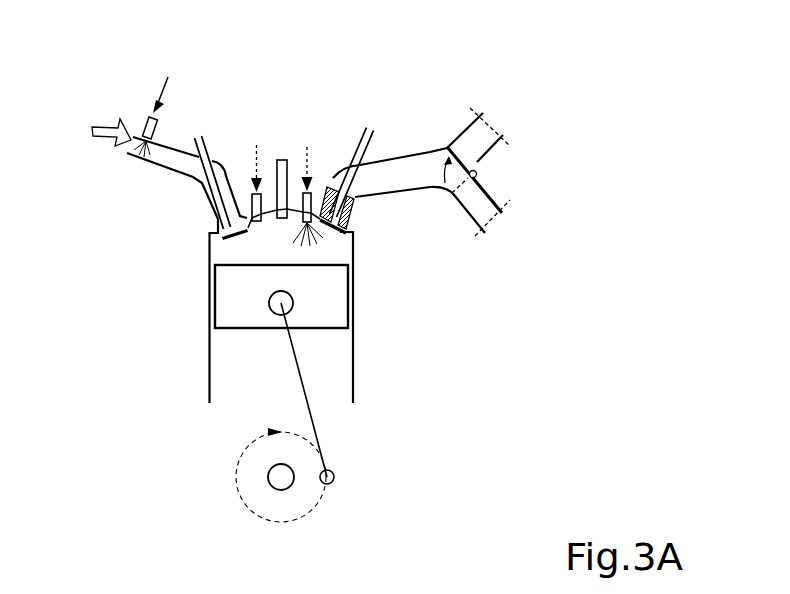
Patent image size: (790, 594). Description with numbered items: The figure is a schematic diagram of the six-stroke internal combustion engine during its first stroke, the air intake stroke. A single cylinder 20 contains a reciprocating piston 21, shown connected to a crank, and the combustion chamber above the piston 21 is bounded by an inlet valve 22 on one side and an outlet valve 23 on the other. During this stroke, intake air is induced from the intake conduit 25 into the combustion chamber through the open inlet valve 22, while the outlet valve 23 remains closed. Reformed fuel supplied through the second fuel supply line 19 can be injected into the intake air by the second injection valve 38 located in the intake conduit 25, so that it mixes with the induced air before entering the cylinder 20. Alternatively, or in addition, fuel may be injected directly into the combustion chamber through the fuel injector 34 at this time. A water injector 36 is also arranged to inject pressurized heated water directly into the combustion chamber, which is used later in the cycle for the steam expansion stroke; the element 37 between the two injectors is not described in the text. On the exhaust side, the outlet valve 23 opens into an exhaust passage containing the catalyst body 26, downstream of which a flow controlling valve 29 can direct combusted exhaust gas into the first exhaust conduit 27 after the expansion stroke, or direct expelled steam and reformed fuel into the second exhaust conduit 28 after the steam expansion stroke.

The second fuel supply line 19 is at (165, 84).
The cylinder 20 is at (178, 379).
The piston 21 is at (230, 308).
The inlet valve 22 is at (213, 195).
The outlet valve 23 is at (232, 250).
The intake conduit 25 is at (160, 163).
The catalyst body 26 is at (355, 207).
The first exhaust conduit 27 is at (498, 217).
The second exhaust conduit 28 is at (492, 130).
The flow controlling valve 29 is at (492, 177).
The fuel injector 34 is at (312, 195).
The water injector 36 is at (252, 200).
The spark plug 37 is at (276, 162).
The second injection valve 38 is at (143, 120).